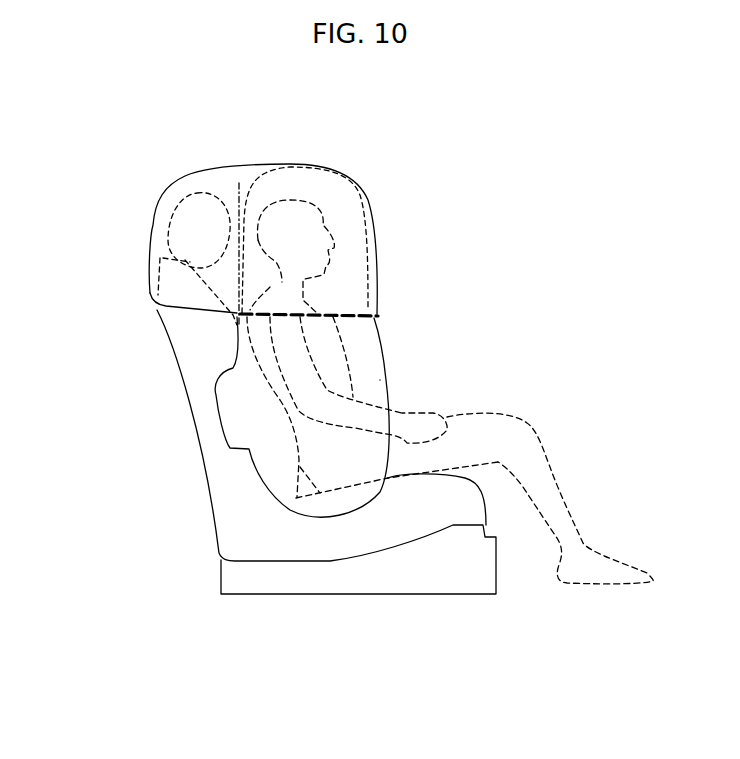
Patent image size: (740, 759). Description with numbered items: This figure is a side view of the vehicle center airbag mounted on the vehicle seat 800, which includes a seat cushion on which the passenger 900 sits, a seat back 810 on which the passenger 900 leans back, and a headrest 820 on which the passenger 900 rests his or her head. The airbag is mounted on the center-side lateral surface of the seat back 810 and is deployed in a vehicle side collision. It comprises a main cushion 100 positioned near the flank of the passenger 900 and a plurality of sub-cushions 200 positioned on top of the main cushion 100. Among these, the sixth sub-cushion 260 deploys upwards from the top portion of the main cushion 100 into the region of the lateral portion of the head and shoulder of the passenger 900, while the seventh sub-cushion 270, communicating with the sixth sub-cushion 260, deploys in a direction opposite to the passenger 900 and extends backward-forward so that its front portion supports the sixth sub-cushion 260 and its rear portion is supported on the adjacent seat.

The main cushion 100 is at (380, 378).
The sub-cushions 200 is at (412, 393).
The sixth sub-cushion 260 is at (350, 262).
The seventh sub-cushion 270 is at (238, 183).
The vehicle seat 800 is at (176, 419).
The seat back 810 is at (230, 508).
The headrest 820 is at (200, 218).
The passenger 900 is at (528, 405).